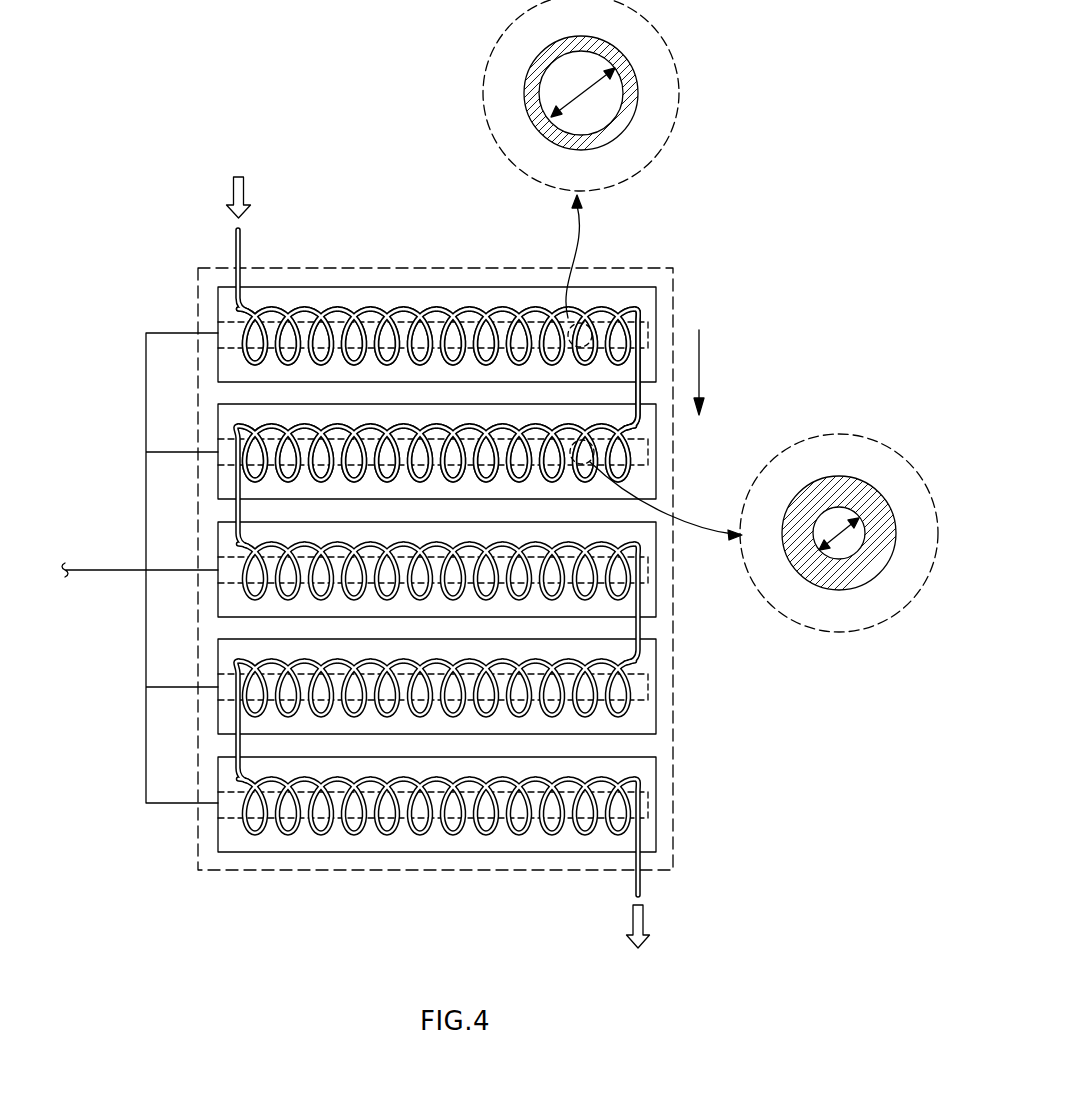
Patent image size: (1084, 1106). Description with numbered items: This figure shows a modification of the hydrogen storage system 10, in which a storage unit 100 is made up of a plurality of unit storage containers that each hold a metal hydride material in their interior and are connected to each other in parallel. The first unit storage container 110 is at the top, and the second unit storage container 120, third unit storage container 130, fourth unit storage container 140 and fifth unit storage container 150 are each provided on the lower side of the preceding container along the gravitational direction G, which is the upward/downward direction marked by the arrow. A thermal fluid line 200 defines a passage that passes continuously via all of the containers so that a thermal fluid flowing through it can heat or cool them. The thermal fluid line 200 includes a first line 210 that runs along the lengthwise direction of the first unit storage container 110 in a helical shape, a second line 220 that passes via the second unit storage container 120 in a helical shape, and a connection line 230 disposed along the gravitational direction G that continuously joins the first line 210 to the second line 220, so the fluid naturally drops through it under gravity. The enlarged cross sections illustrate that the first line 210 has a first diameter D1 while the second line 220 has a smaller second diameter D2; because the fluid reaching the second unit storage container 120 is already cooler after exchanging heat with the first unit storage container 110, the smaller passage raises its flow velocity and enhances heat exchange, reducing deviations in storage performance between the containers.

The hydrogen storage system 10 is at (181, 129).
The storage unit 100 is at (198, 267).
The first unit storage container 110 is at (218, 300).
The second unit storage container 120 is at (218, 418).
The third unit storage container 130 is at (218, 537).
The fourth unit storage container 140 is at (218, 655).
The fifth unit storage container 150 is at (218, 773).
The thermal fluid line 200 is at (371, 311).
The first line 210 is at (436, 310).
The second line 220 is at (503, 428).
The connection line 230 is at (652, 322).
The first diameter D1 is at (582, 95).
The second diameter D2 is at (847, 538).
The gravitational direction G is at (702, 362).